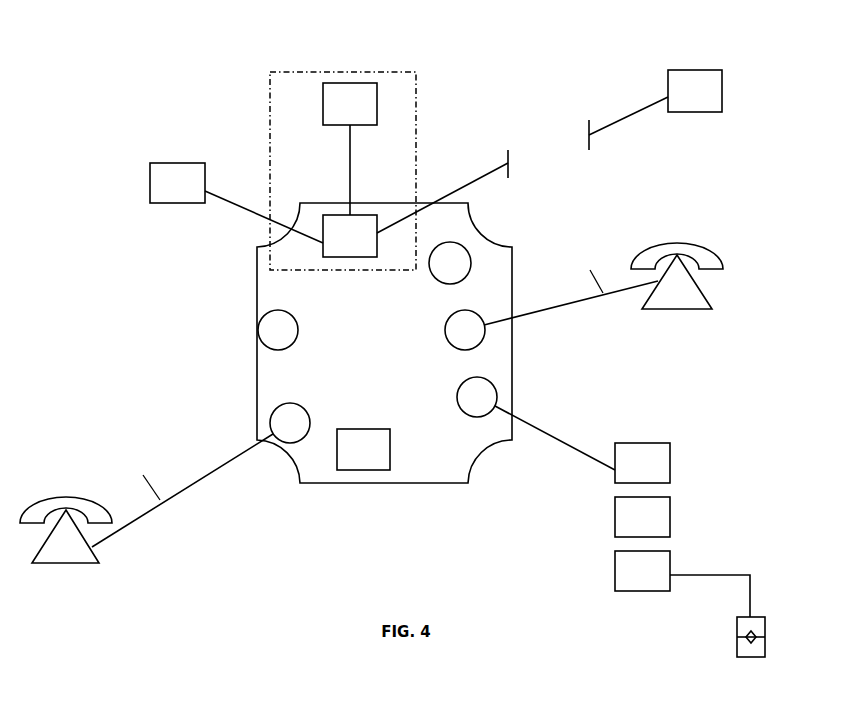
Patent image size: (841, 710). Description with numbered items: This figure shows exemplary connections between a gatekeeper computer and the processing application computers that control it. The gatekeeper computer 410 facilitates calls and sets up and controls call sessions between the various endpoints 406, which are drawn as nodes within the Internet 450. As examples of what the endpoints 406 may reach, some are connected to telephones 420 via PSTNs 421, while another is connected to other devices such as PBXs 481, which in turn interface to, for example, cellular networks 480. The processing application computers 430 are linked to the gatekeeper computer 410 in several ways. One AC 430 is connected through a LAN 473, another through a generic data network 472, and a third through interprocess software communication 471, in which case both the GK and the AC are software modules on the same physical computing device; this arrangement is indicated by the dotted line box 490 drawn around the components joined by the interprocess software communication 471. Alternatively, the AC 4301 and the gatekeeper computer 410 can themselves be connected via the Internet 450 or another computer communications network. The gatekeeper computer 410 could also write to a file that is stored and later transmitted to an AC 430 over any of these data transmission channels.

The endpoints 406 is at (430, 277).
The gatekeeper computer 410 is at (335, 215).
The telephones 420 is at (83, 563).
The PSTNs 421 is at (197, 482).
The processing application computers 430 is at (377, 112).
The processing application computer 4301 is at (352, 470).
The Internet 450 is at (257, 297).
The interprocess software communication 471 is at (350, 163).
The generic data network 472 is at (242, 207).
The LAN 473 is at (623, 122).
The cellular networks 480 is at (765, 633).
The PBXs 481 is at (631, 593).
The dotted line box 490 is at (267, 97).